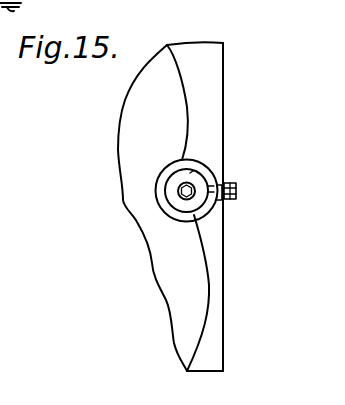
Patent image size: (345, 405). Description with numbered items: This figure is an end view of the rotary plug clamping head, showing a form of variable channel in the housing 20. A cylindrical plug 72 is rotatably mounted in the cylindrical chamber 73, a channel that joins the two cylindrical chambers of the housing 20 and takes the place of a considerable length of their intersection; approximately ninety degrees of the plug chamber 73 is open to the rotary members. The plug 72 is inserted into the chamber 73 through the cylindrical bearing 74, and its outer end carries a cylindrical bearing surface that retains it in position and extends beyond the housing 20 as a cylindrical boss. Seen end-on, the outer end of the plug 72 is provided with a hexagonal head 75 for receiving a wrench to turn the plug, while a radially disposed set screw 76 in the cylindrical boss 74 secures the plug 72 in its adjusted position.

The housing 20 is at (173, 113).
The plug 72 is at (193, 200).
The cylindrical chamber 73 is at (192, 172).
The cylindrical bearing 74 is at (156, 188).
The hexagonal head 75 is at (180, 196).
The set screw 76 is at (236, 185).